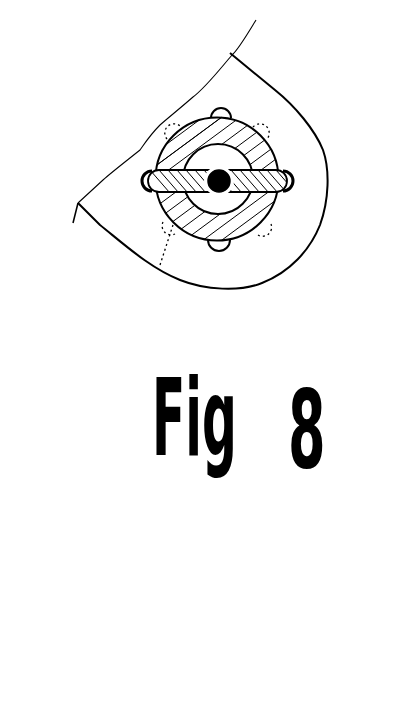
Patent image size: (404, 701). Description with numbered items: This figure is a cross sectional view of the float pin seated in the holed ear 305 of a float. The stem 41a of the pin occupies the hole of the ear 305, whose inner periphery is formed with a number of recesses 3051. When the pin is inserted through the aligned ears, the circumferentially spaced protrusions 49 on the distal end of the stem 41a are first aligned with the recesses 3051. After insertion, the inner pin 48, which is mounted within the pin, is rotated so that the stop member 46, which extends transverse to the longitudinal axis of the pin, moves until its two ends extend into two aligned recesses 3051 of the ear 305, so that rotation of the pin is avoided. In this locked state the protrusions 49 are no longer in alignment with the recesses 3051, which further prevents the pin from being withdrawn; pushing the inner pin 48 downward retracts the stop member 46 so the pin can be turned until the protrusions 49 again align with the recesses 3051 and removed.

The ear 305 is at (297, 237).
The recess 3051 is at (223, 110).
The stem 41a is at (193, 133).
The stop member 46 is at (278, 171).
The inner pin 48 is at (220, 185).
The protrusions 49 is at (158, 276).